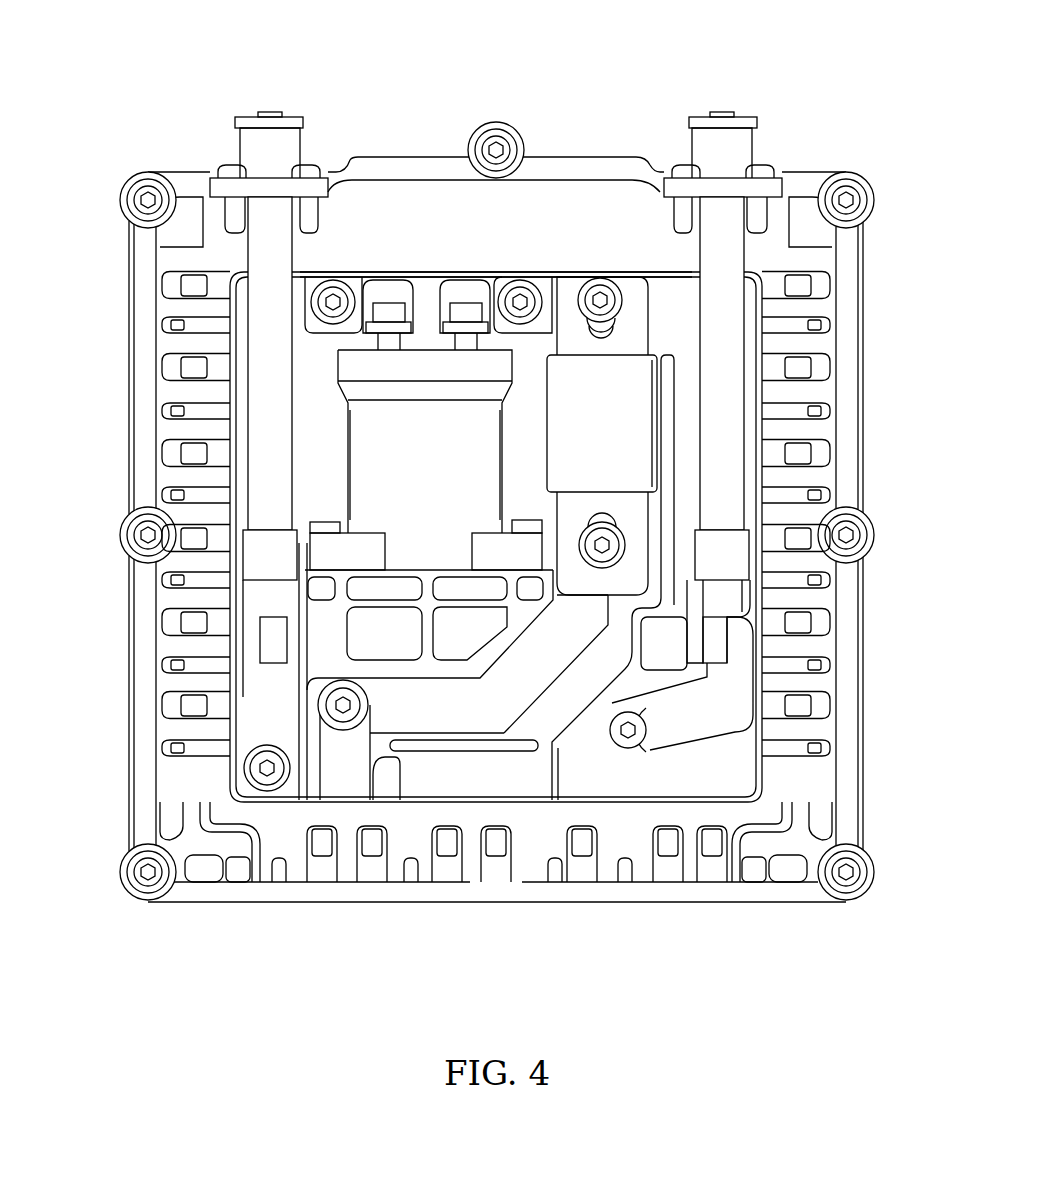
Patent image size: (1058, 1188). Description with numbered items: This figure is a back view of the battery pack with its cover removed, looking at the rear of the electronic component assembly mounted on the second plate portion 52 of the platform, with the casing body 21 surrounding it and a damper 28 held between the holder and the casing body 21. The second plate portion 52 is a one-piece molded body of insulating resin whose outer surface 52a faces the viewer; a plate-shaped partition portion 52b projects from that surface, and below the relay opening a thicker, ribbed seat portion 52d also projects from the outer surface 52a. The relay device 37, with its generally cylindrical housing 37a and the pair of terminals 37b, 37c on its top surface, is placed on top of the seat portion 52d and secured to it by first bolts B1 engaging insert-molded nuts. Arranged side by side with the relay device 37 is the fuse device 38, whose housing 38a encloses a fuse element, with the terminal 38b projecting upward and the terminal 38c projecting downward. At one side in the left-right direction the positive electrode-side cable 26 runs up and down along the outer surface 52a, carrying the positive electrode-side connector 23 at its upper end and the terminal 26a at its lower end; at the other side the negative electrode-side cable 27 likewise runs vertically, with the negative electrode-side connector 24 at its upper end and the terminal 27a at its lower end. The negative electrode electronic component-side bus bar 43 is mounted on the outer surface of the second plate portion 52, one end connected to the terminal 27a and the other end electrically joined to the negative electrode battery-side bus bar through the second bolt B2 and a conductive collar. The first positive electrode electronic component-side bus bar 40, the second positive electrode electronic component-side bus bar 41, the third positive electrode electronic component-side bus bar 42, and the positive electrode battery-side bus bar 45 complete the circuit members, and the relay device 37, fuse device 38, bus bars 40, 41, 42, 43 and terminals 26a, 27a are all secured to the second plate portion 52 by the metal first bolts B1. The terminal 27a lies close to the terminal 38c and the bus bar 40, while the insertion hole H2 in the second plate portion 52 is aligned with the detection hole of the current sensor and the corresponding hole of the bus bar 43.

The casing body 21 is at (805, 905).
The positive electrode-side connector 23 is at (270, 112).
The negative electrode-side connector 24 is at (722, 112).
The positive electrode-side cable 26 is at (268, 353).
The terminal 26a is at (290, 593).
The negative electrode-side cable 27 is at (725, 355).
The terminal 27a is at (712, 595).
The damper 28 is at (765, 852).
The relay device 37 is at (348, 497).
The housing 37a is at (365, 430).
The terminal 37b is at (400, 303).
The terminal 37c is at (465, 300).
The fuse device 38 is at (636, 432).
The housing 38a is at (643, 465).
The terminal 38b is at (633, 288).
The terminal 38c is at (632, 545).
The first positive electrode electronic component-side bus bar 40 is at (430, 715).
The second positive electrode electronic component-side bus bar 41 is at (500, 288).
The third positive electrode electronic component-side bus bar 42 is at (367, 270).
The negative electrode electronic component-side bus bar 43 is at (722, 710).
The positive electrode battery-side bus bar 45 is at (342, 797).
The second plate portion 52 is at (250, 707).
The outer surface 52a is at (468, 772).
The partition portion 52b is at (562, 735).
The seat portion 52d is at (365, 615).
The first bolts B1 is at (598, 292).
The second bolt B2 is at (625, 738).
The insertion hole H2 is at (620, 745).